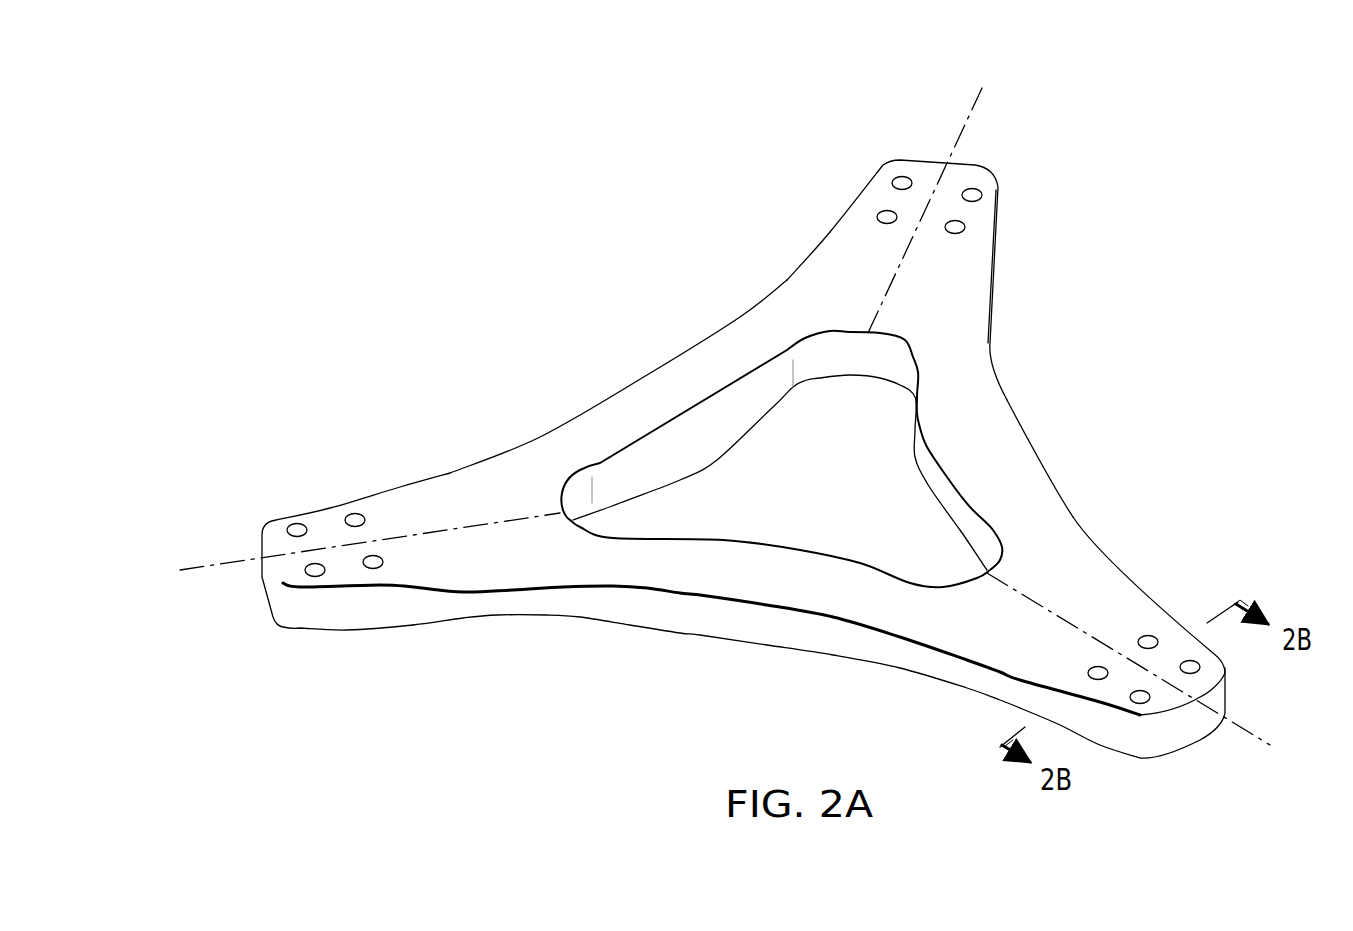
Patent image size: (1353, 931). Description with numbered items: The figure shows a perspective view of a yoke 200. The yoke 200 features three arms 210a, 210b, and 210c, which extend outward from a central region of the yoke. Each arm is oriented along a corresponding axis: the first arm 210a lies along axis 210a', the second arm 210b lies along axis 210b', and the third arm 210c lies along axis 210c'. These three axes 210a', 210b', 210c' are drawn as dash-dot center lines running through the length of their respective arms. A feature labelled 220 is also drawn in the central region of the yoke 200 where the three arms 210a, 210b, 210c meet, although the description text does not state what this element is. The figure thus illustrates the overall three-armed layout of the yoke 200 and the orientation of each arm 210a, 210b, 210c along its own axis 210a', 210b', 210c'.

The yoke 200 is at (386, 176).
The arm 210a is at (1122, 637).
The arm 210b is at (890, 280).
The arm 210c is at (356, 533).
The axis 210a' is at (1152, 659).
The axis 210b' is at (925, 192).
The axis 210c' is at (355, 539).
The central recess 220 is at (645, 368).